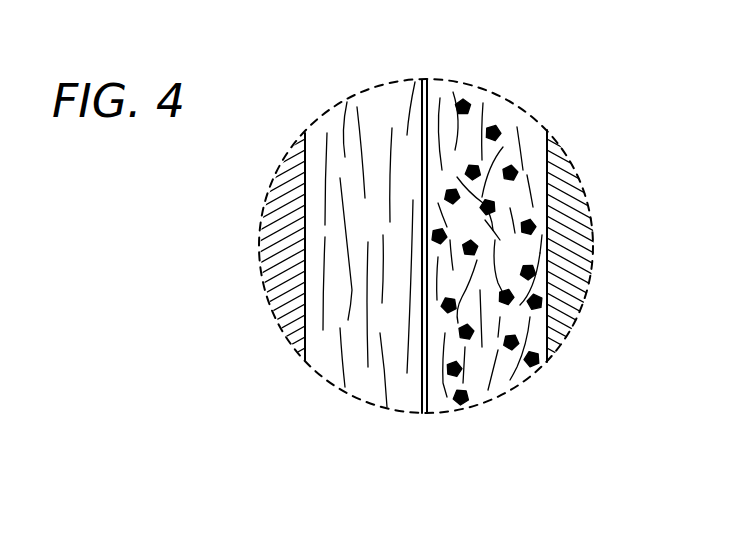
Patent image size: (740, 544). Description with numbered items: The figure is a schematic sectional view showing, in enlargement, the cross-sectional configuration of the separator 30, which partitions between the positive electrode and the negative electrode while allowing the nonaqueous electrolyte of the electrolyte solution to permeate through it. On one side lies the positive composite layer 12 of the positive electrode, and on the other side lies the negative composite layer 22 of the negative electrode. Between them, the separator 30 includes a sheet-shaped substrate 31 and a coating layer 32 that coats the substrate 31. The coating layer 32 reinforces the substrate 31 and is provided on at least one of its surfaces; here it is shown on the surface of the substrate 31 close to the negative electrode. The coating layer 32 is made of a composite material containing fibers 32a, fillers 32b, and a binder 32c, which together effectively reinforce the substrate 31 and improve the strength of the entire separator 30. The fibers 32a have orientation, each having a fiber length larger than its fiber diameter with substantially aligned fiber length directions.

The positive composite layer 12 is at (273, 191).
The negative composite layer 22 is at (570, 215).
The separator 30 is at (465, 262).
The substrate 31 is at (393, 418).
The coating layer 32 is at (518, 243).
The fibers 32a is at (542, 128).
The fillers 32b is at (463, 100).
The binder 32c is at (502, 118).